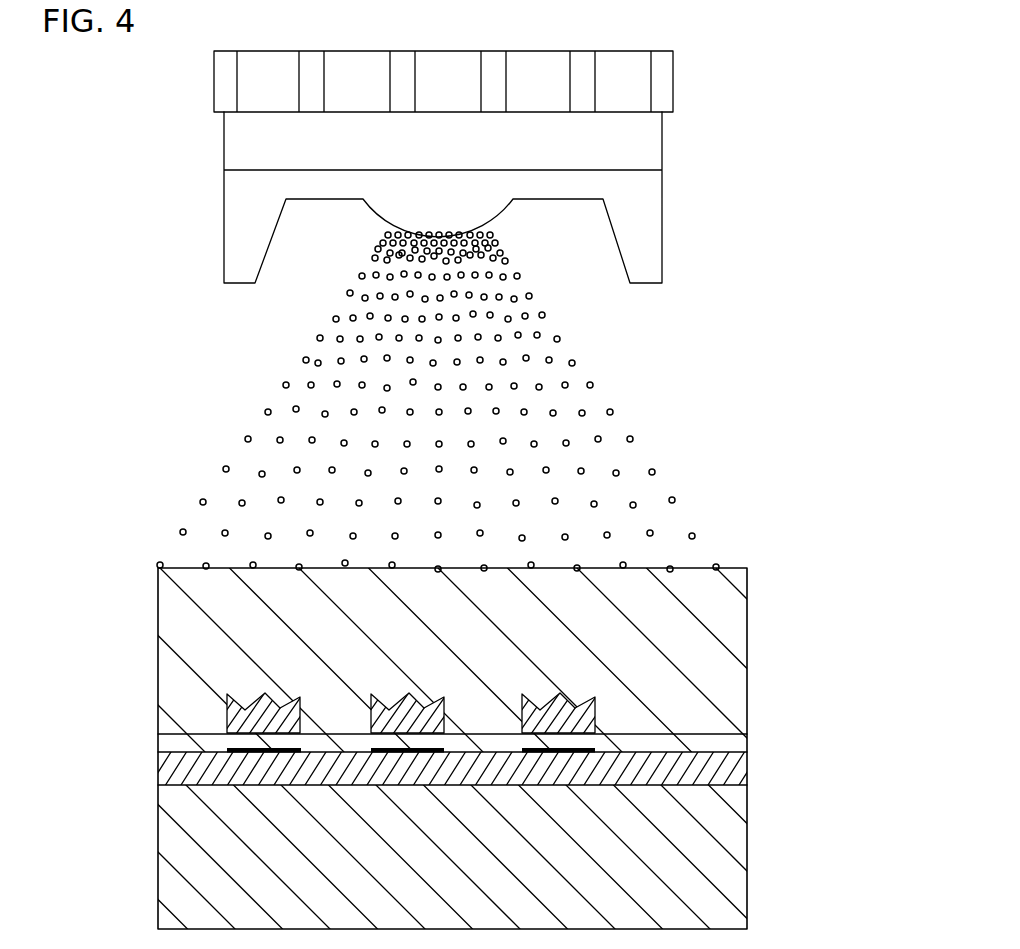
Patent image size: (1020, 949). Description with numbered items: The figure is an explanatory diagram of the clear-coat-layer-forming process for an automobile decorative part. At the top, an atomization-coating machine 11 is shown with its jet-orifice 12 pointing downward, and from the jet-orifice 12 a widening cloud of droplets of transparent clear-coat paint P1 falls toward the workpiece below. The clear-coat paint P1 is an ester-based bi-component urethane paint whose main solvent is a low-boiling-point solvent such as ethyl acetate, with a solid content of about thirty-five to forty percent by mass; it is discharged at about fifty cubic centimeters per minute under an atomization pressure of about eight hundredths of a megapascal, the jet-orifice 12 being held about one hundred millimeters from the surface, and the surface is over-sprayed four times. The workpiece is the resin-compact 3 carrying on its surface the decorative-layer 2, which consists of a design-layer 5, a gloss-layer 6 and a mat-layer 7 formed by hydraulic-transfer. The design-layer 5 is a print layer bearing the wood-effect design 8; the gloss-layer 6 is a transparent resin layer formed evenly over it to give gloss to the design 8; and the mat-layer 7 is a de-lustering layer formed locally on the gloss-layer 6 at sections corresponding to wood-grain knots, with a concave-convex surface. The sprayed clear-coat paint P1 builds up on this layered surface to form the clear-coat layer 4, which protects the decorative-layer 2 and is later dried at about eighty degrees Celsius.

The decorative-layer 2 is at (801, 675).
The resin-compact 3 is at (740, 828).
The clear-coat layer 4 is at (740, 631).
The design-layer 5 is at (733, 772).
The gloss-layer 6 is at (733, 742).
The mat-layer 7 is at (595, 714).
The design 8 is at (275, 752).
The atomization-coating machine 11 is at (224, 150).
The jet-orifice 12 is at (487, 238).
The clear-coat paint P1 is at (303, 360).